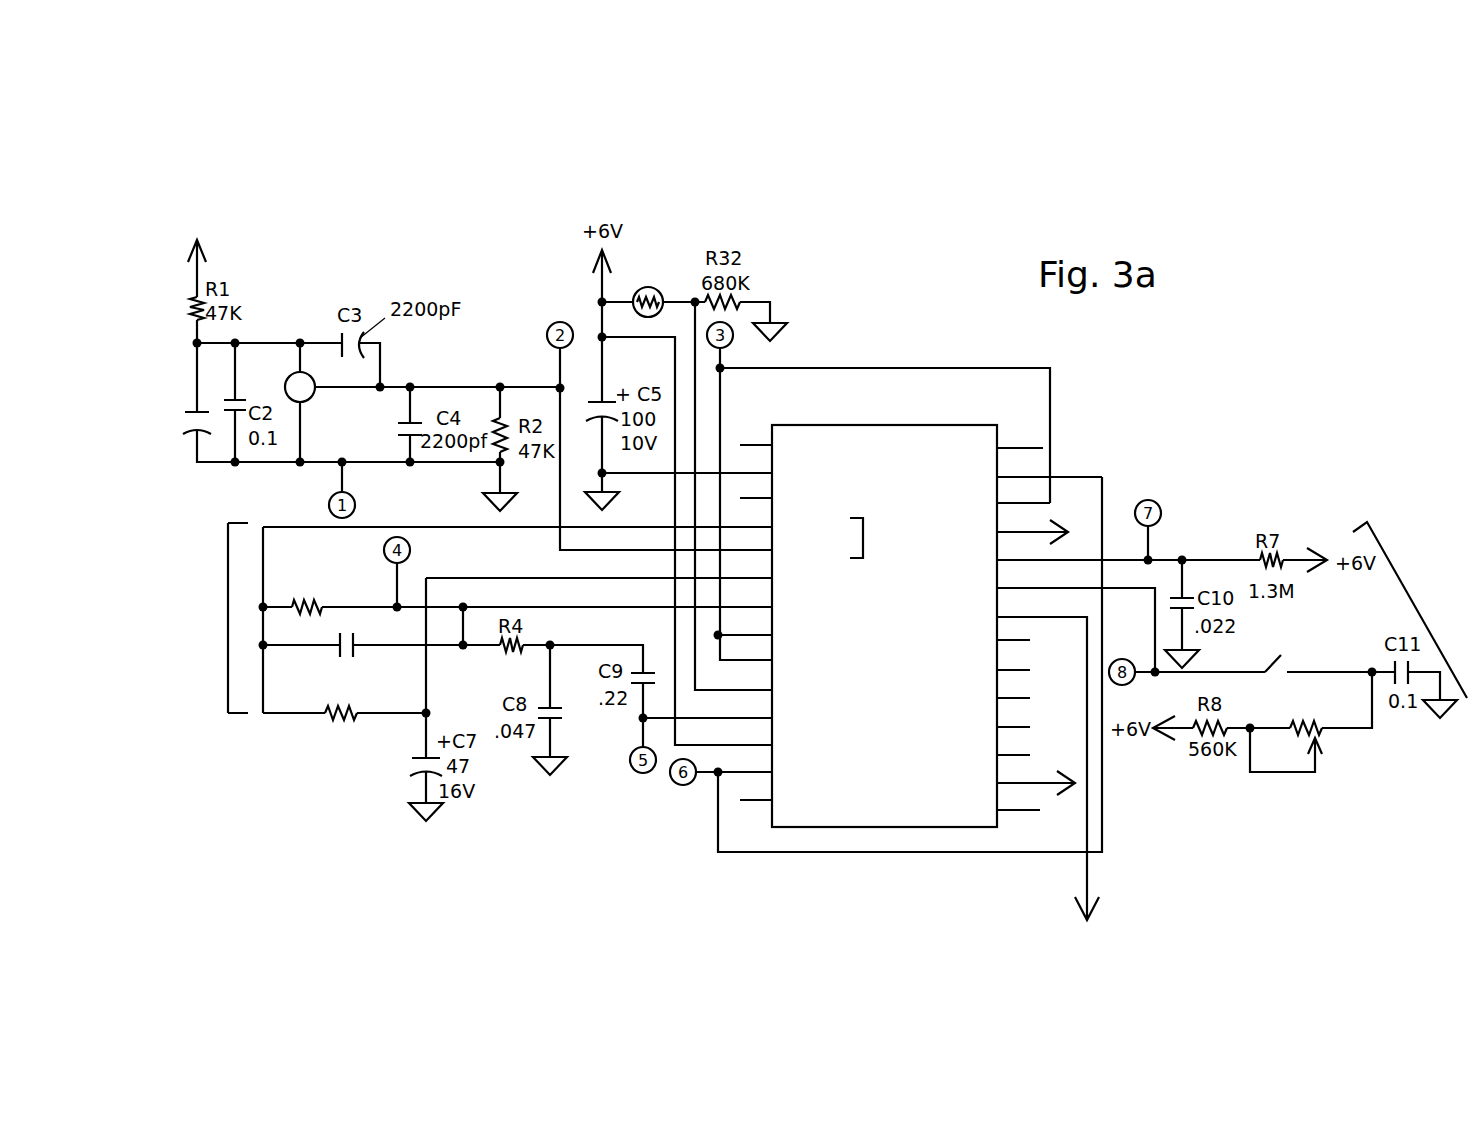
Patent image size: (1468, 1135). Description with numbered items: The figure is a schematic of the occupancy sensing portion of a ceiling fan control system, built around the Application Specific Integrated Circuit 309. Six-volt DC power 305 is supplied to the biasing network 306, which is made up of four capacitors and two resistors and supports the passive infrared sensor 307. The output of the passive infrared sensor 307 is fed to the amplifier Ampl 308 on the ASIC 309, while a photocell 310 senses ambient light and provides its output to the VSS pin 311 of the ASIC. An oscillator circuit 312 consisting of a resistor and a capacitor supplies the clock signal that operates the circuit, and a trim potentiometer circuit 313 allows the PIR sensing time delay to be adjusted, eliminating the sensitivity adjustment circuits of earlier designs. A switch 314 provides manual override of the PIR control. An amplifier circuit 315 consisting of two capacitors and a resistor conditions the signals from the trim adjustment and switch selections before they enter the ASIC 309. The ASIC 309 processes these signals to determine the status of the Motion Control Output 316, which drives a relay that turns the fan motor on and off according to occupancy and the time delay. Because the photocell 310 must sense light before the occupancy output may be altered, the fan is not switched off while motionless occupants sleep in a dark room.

The power 305 is at (205, 253).
The biasing network 306 is at (192, 405).
The passive infrared sensor Q1 307 is at (297, 370).
The Ampl 308 is at (865, 548).
The Application Specific Integrated Circuit (ASIC) 309 is at (880, 410).
The photocell (CDS1) 310 is at (653, 250).
The VSS pin 311 is at (825, 473).
The oscillator circuit 312 is at (1390, 562).
The trim potentiometer circuit VR2 and R8 313 is at (1285, 772).
The switch 314 is at (1302, 637).
The amplifier circuit 315 is at (228, 627).
The Motion Control Output (MCO) 316 is at (1033, 605).